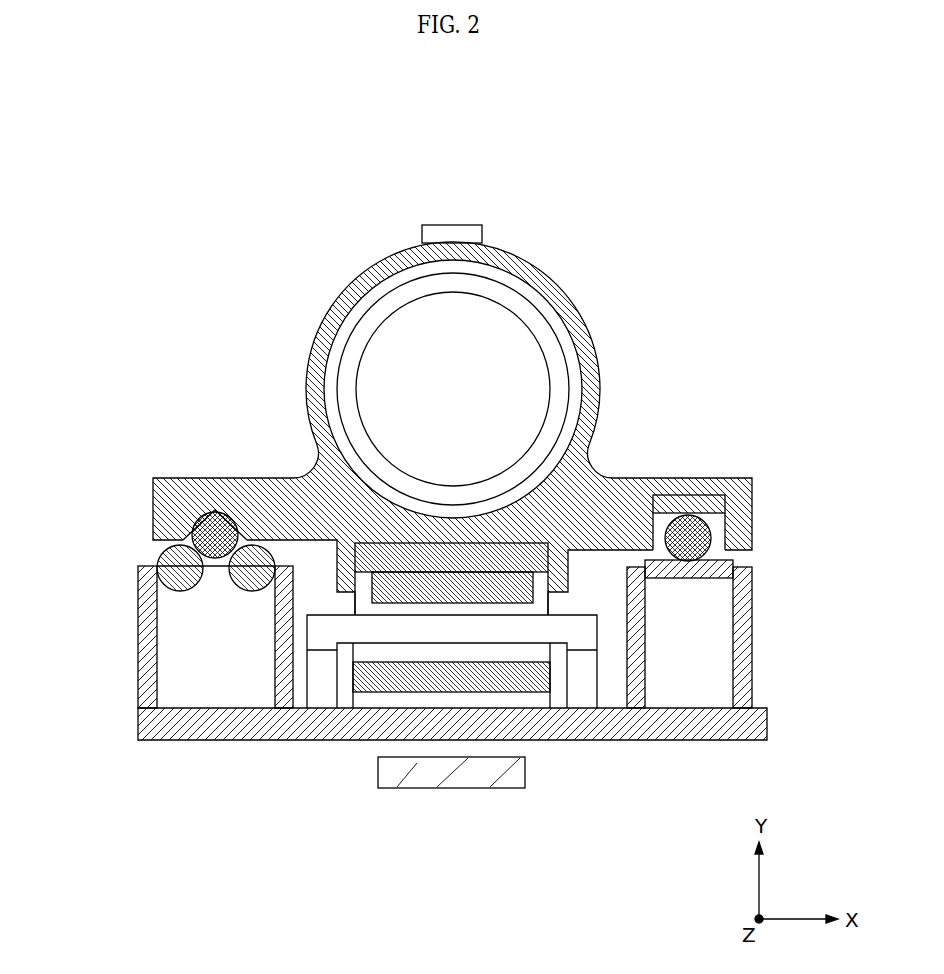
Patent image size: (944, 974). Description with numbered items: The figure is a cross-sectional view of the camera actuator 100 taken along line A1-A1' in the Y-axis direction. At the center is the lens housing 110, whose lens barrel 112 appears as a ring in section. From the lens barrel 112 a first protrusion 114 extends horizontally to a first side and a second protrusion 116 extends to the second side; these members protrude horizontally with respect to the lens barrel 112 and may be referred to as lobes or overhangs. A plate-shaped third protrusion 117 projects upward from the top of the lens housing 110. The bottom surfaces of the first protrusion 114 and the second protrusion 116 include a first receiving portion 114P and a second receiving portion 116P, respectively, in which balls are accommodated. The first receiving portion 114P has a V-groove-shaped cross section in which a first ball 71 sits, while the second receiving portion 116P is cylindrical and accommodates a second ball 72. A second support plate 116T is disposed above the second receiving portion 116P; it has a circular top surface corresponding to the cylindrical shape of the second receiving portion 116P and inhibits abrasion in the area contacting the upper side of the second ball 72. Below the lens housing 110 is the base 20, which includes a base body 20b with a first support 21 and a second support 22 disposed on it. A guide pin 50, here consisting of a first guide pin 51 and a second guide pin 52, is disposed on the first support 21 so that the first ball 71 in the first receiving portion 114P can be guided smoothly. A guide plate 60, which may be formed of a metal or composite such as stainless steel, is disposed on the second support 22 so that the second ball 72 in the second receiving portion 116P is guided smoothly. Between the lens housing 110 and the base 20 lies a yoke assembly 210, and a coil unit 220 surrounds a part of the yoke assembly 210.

The camera actuator 100 is at (200, 88).
The lens housing 110 is at (727, 153).
The lens barrel 112 is at (505, 260).
The first protrusion 114 is at (248, 475).
The first receiving portion 114P is at (190, 527).
The second protrusion 116 is at (678, 477).
The second support plate 116T is at (718, 505).
The second receiving portion 116P is at (725, 528).
The third protrusion 117 is at (447, 233).
The first ball 71 is at (212, 525).
The second ball 72 is at (695, 527).
The guide pin 50 is at (158, 599).
The first guide pin 51 is at (170, 562).
The second guide pin 52 is at (247, 580).
The guide plate 60 is at (727, 563).
The yoke assembly 210 is at (528, 555).
The coil unit 220 is at (580, 632).
The base 20 is at (452, 741).
The base body 20b is at (451, 792).
The first support 21 is at (235, 740).
The second support 22 is at (687, 740).